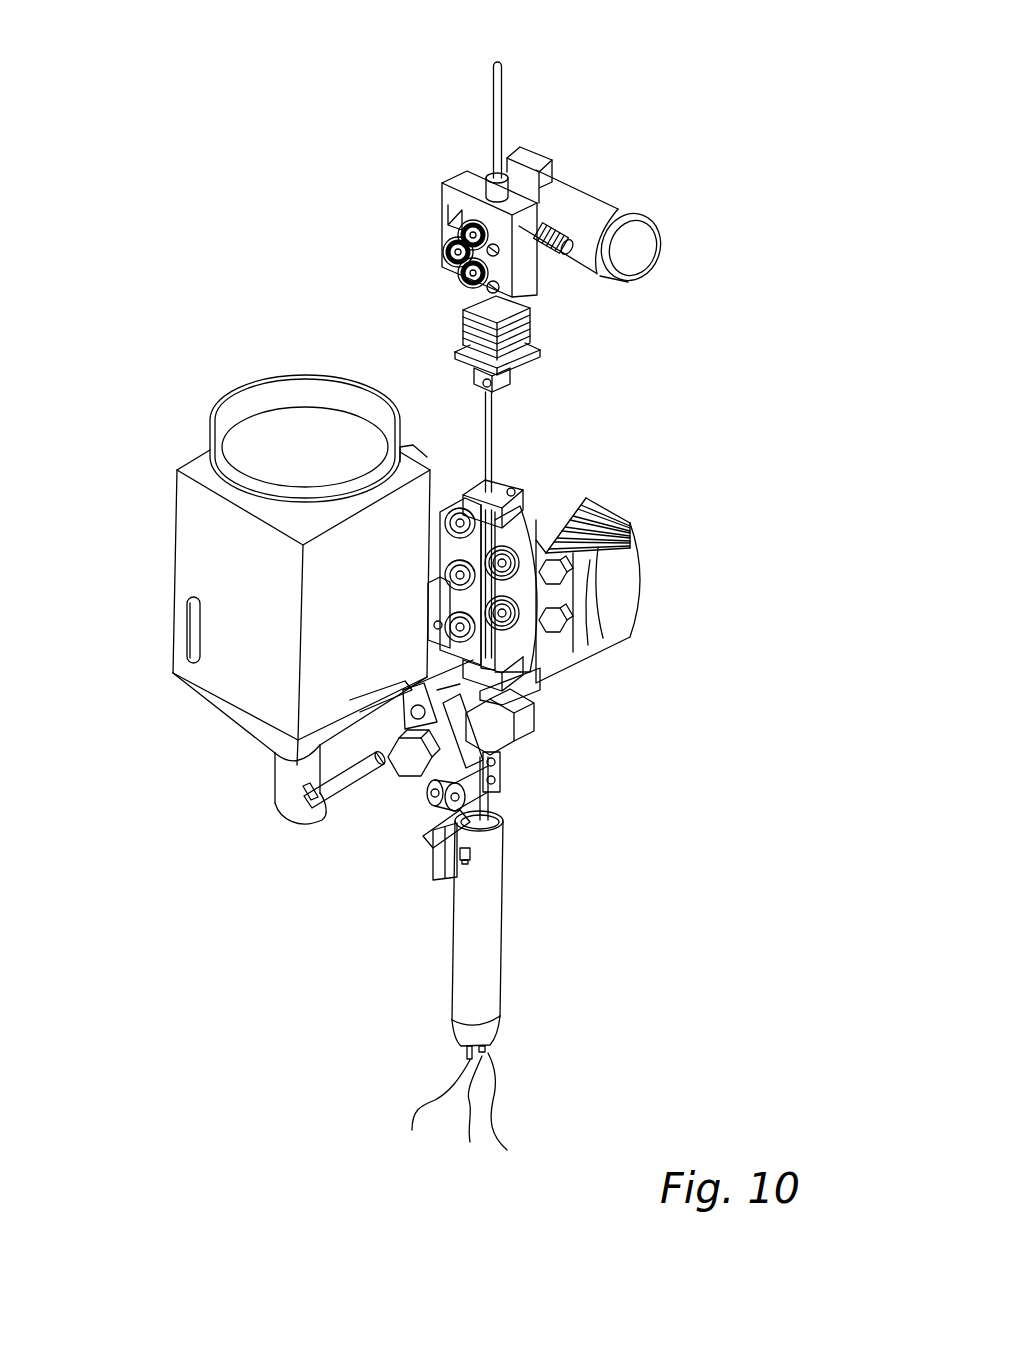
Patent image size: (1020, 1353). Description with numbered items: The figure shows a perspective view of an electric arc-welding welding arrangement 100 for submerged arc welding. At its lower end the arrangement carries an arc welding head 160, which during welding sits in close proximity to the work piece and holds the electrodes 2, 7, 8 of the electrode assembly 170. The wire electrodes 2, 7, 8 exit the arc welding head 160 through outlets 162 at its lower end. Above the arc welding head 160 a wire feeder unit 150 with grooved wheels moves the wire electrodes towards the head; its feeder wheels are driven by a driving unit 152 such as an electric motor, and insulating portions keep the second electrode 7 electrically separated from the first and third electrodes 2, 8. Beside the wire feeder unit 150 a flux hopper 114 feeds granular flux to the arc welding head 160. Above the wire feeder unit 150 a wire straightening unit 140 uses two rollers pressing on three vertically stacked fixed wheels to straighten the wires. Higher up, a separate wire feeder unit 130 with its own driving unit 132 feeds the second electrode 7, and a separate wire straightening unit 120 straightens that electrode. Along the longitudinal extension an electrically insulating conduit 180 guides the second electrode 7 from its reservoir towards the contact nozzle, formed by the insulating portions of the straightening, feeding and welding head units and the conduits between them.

The electric arc-welding welding arrangement 100 is at (280, 170).
The flux hopper 114 is at (184, 533).
The wire straightening unit 120 is at (483, 165).
The wire feeder unit 130 is at (434, 237).
The driving unit 132 is at (588, 205).
The wire straightening unit 140 is at (530, 507).
The wire feeder unit 150 is at (557, 708).
The driving unit 152 is at (626, 587).
The arc welding head 160 is at (505, 913).
The outlets 162 is at (463, 1033).
The electrode assembly 170 is at (494, 1051).
The electrically insulating conduit 180 is at (499, 105).
The first electrode 2 is at (508, 1113).
The second electrode 7 is at (468, 1117).
The third electrode 8 is at (432, 1113).